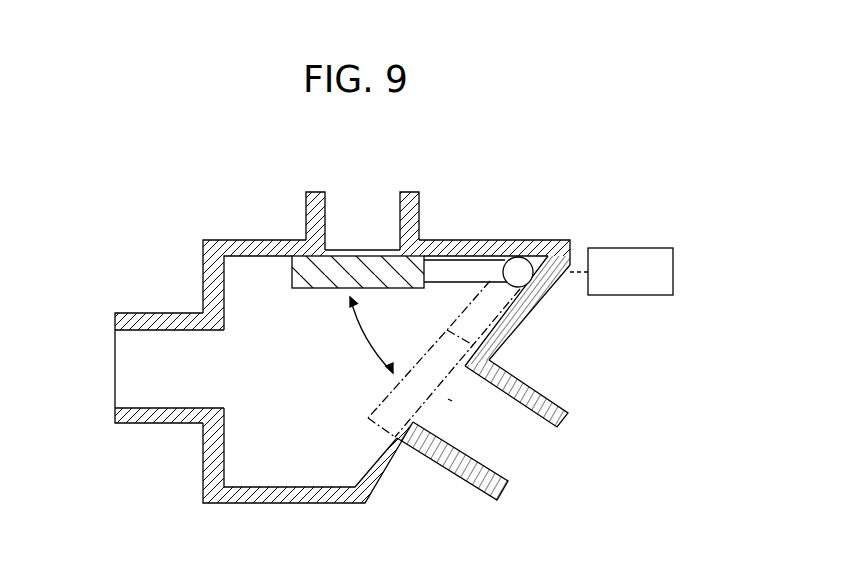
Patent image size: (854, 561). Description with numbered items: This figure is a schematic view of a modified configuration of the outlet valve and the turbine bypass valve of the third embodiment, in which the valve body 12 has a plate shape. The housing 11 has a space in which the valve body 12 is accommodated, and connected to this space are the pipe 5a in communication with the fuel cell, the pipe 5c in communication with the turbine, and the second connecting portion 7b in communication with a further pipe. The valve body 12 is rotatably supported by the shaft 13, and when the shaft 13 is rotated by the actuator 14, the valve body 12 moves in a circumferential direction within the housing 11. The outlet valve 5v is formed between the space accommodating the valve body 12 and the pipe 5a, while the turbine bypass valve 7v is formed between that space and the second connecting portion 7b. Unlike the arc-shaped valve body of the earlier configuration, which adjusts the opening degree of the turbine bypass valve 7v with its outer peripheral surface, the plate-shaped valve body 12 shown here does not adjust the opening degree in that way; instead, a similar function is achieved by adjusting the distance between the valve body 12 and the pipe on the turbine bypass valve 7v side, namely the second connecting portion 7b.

The pipe 5a is at (362, 207).
The outlet valve 5v is at (362, 250).
The pipe 5c is at (150, 371).
The second connecting portion 7b is at (520, 451).
The turbine bypass valve 7v is at (450, 400).
The housing 11 is at (506, 338).
The valve body 12 is at (327, 272).
The shaft 13 is at (518, 270).
The actuator 14 is at (676, 272).